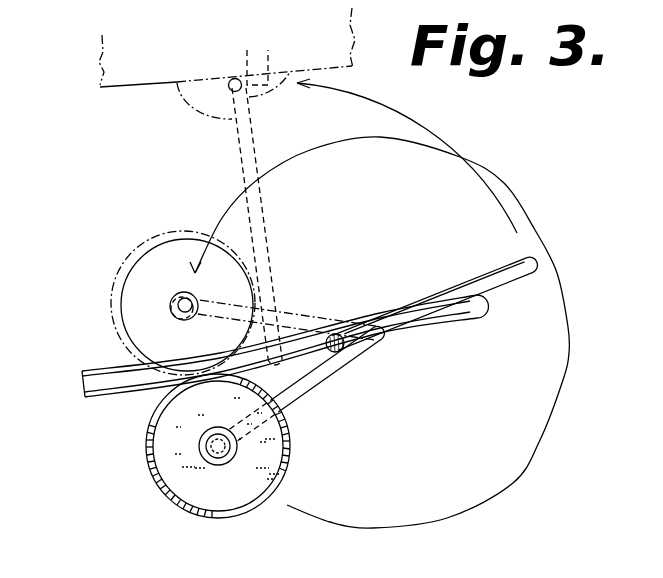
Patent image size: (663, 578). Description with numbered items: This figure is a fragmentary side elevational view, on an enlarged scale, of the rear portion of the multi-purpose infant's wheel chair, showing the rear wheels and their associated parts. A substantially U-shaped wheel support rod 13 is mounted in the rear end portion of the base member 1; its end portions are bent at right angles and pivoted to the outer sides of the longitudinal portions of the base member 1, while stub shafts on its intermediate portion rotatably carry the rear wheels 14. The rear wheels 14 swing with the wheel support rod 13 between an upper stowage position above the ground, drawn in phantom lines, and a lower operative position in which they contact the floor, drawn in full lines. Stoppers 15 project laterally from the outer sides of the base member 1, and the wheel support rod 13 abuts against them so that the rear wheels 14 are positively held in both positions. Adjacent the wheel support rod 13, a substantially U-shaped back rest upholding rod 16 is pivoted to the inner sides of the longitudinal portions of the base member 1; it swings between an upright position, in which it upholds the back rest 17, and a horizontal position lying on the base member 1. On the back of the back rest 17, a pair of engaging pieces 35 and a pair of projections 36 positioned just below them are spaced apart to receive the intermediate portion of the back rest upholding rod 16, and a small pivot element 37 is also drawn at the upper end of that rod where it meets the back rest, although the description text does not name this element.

The base member 1 is at (417, 333).
The wheel support rod 13 is at (317, 383).
The rear wheels 14 is at (200, 497).
The stoppers 15 is at (338, 334).
The back rest upholding rod 16 is at (260, 223).
The back rest 17 is at (110, 80).
The engaging pieces 35 is at (265, 93).
The projections 36 is at (193, 108).
The pin 37 is at (232, 74).